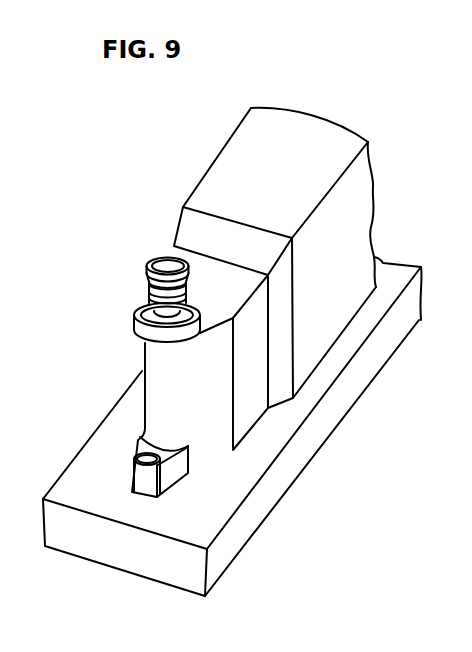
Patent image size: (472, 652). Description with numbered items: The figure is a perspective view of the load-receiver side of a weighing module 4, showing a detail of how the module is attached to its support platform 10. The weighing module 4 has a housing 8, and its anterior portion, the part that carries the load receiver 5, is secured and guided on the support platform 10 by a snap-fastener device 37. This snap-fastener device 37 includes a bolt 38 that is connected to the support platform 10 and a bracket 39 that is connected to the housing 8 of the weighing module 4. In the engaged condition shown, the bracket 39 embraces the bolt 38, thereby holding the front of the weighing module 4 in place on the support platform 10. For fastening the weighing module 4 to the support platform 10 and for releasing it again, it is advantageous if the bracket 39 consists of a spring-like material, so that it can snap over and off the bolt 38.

The weighing module 4 is at (184, 187).
The load receiver 5 is at (133, 257).
The housing 8 is at (316, 152).
The support platform 10 is at (264, 484).
The snap-fastener device 37 is at (129, 473).
The bolt 38 is at (140, 488).
The bracket 39 is at (170, 473).